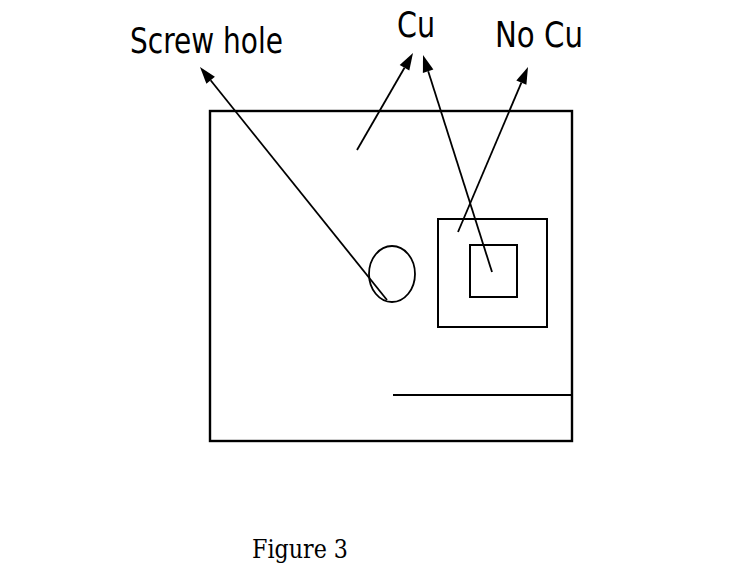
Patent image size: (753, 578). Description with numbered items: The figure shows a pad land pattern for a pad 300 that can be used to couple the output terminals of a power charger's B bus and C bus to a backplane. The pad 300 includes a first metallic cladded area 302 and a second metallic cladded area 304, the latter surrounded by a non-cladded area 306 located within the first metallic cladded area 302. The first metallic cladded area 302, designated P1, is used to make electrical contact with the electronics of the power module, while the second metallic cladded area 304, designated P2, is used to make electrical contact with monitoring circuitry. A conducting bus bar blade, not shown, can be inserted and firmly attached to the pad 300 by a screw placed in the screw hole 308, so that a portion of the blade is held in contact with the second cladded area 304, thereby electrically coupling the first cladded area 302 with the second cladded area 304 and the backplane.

The pad 300 is at (572, 152).
The first metallic cladded area 302 is at (572, 395).
The second metallic cladded area 304 is at (493, 282).
The non-cladded area 306 is at (532, 302).
The screw hole 308 is at (398, 283).
The first cladded area connection point P1 is at (278, 275).
The second cladded area connection point P2 is at (470, 270).